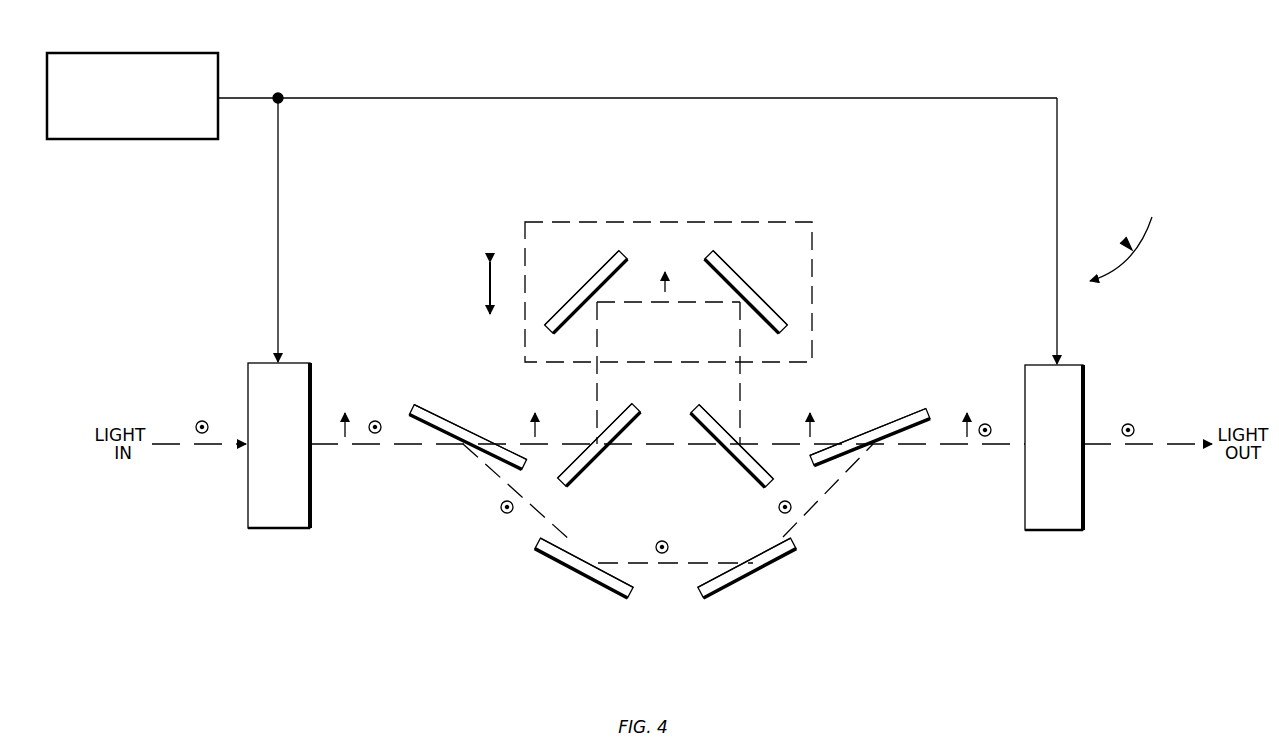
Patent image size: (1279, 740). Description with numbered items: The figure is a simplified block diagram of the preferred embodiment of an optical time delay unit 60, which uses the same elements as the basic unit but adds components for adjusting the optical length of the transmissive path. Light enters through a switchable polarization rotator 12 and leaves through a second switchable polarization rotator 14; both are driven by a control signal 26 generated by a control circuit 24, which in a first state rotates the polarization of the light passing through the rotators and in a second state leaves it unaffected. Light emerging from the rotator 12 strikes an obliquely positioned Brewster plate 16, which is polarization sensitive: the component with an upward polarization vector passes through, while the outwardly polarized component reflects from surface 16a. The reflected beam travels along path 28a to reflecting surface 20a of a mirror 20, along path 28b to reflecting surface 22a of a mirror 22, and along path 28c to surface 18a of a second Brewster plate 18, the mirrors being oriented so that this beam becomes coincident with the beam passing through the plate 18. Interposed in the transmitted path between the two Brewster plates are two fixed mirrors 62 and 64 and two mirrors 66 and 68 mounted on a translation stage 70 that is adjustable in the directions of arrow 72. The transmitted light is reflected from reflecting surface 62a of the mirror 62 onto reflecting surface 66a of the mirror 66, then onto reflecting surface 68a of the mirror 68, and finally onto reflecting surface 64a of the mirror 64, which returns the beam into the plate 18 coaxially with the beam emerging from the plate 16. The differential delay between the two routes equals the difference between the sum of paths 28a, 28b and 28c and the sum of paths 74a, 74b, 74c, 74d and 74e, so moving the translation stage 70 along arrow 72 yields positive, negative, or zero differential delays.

The switchable polarization rotator 12 is at (300, 528).
The switchable polarization rotator 14 is at (1037, 522).
The Brewster plate 16 is at (413, 410).
The surface of Brewster plate 16a is at (410, 422).
The Brewster plate 18 is at (917, 417).
The surface of Brewster plate 18a is at (928, 425).
The mirror 20 is at (622, 588).
The reflecting surface of mirror 20a is at (630, 575).
The mirror 22 is at (720, 588).
The reflecting surface of mirror 22a is at (702, 575).
The control circuit 24 is at (153, 53).
The control signal 26 is at (270, 97).
The path 28a is at (510, 483).
The path 28b is at (710, 563).
The path 28c is at (787, 525).
The time delay unit 60 is at (1128, 238).
The mirror 62 is at (578, 484).
The reflecting surface of mirror 62a is at (620, 418).
The mirror 64 is at (757, 480).
The reflecting surface of mirror 64a is at (723, 420).
The mirror 66 is at (601, 280).
The reflecting surface of mirror 66a is at (572, 333).
The mirror 68 is at (731, 277).
The reflecting surface of mirror 68a is at (762, 333).
The translation stage 70 is at (813, 259).
The arrow 72 is at (490, 285).
The path 74a is at (552, 444).
The path 74b is at (597, 387).
The path 74c is at (648, 302).
The path 74d is at (740, 387).
The path 74e is at (793, 444).